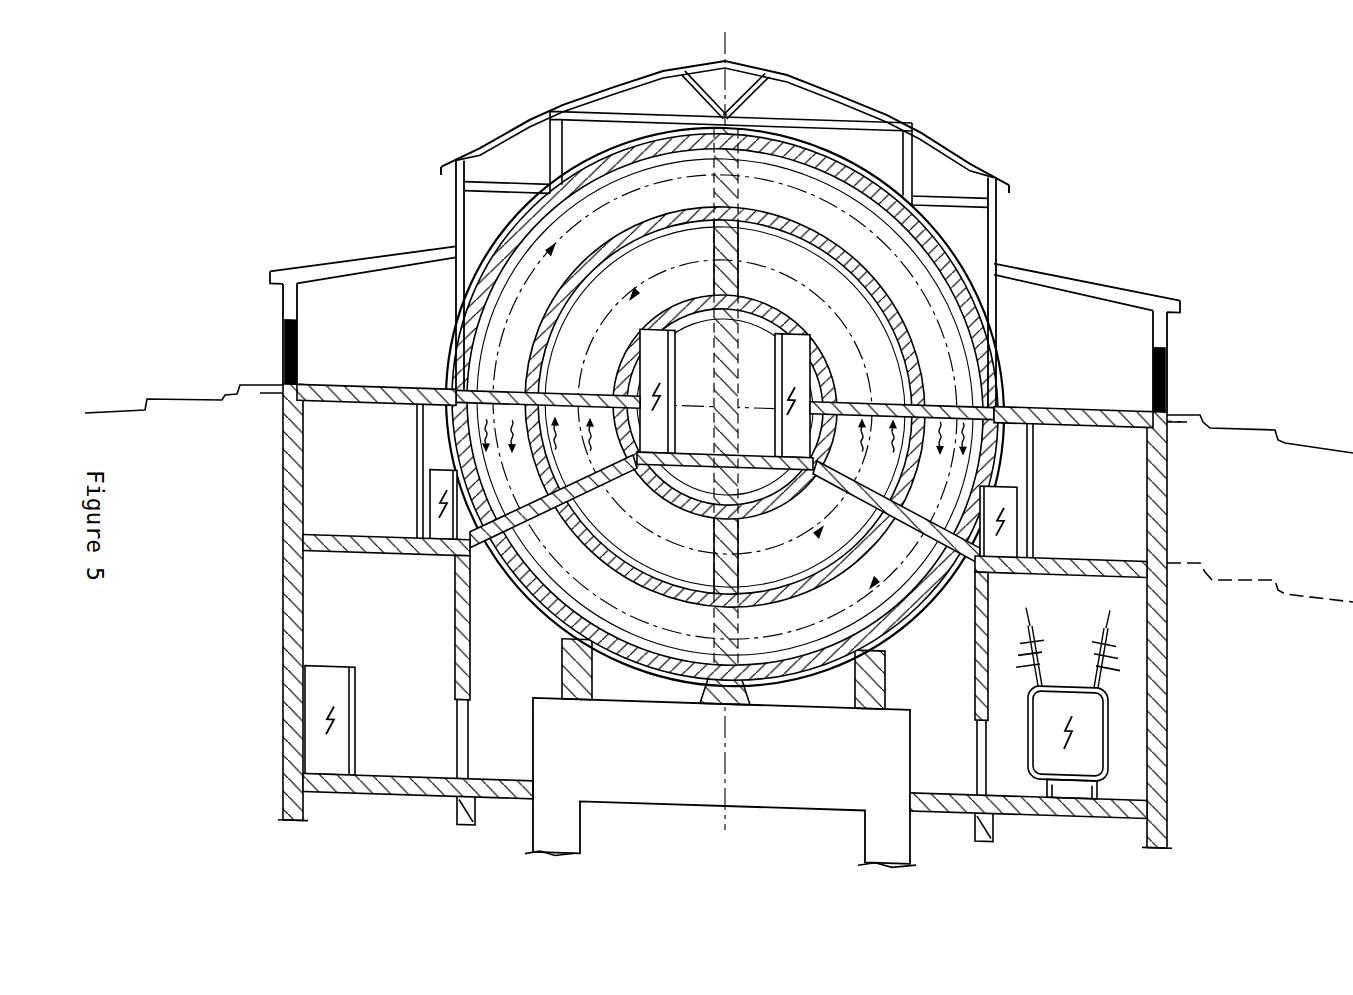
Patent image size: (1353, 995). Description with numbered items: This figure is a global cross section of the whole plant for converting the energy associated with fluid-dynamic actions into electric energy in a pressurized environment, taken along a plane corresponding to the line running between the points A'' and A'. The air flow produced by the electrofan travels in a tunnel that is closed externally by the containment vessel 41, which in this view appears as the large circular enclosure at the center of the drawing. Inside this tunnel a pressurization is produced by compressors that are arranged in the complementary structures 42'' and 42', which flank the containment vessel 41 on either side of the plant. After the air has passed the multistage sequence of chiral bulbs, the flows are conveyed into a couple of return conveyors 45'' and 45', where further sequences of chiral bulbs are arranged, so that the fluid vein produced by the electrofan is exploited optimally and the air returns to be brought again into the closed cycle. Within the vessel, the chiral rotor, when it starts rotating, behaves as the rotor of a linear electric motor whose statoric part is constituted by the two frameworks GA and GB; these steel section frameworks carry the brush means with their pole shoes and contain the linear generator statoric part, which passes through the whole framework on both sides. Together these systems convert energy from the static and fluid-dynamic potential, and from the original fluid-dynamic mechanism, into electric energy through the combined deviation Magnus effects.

The containment vessel 41 is at (955, 245).
The complementary structure 42'' is at (363, 532).
The complementary structure 42' is at (1087, 556).
The return conveyor 45'' is at (548, 379).
The return conveyor 45' is at (902, 391).
The section line end A'' is at (376, 376).
The section line end A' is at (1073, 399).
The framework GA is at (663, 312).
The framework GB is at (690, 598).